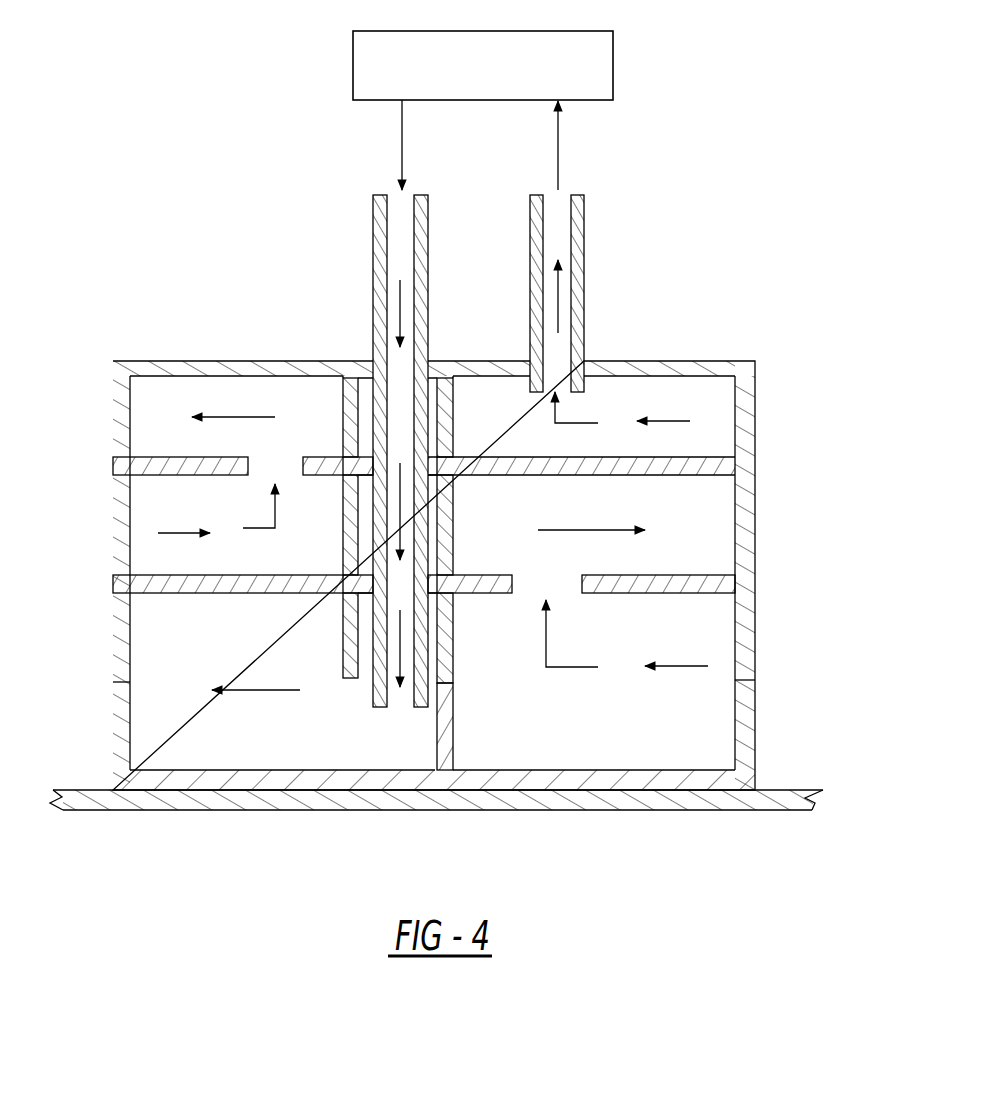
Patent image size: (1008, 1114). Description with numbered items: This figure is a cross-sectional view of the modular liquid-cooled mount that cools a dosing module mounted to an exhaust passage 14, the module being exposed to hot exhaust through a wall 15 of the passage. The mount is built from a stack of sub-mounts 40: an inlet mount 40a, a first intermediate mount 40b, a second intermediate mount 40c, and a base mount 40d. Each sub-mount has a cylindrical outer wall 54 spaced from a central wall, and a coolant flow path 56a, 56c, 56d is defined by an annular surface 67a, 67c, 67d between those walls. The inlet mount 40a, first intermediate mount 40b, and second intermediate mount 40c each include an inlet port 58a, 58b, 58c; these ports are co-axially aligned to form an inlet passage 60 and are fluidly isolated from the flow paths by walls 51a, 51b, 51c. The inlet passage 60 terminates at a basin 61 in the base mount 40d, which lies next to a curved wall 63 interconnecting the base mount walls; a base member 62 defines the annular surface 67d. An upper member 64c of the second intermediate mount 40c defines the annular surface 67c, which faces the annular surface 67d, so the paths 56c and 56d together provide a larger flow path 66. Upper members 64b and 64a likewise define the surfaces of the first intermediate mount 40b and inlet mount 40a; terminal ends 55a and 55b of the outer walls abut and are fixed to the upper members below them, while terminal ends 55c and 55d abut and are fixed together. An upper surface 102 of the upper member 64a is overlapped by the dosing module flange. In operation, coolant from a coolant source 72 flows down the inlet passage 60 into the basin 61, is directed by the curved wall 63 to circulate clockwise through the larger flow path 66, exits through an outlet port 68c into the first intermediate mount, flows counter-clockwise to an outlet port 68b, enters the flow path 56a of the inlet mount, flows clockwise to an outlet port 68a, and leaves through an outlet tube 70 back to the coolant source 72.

The exhaust passage 14 is at (107, 812).
The wall 15 is at (436, 800).
The sub-mount 40 is at (700, 794).
The inlet mount 40a is at (755, 391).
The first intermediate mount 40b is at (755, 527).
The second intermediate mount 40c is at (755, 625).
The base mount 40d is at (755, 744).
The wall 51a is at (348, 390).
The wall 51b is at (348, 491).
The wall 51c is at (348, 643).
The cylindrical outer wall 54 is at (373, 236).
The terminal end 55a is at (745, 452).
The terminal end 55b is at (140, 522).
The terminal end 55c is at (128, 683).
The terminal end 55d is at (745, 675).
The coolant flow path 56a is at (153, 436).
The coolant flow path 56c is at (163, 635).
The coolant flow path 56d is at (165, 712).
The inlet port 58a is at (422, 368).
The inlet port 58b is at (433, 455).
The inlet port 58c is at (430, 560).
The inlet passage 60 is at (365, 532).
The basin 61 is at (410, 760).
The base member 62 is at (288, 782).
The curved wall 63 is at (437, 738).
The upper member 64a is at (150, 367).
The upper member 64b is at (162, 476).
The upper member 64c is at (642, 577).
The larger flow path 66 is at (538, 745).
The annular surface 67a is at (172, 377).
The annular surface 67c is at (192, 592).
The annular surface 67d is at (190, 770).
The outlet port 68a is at (585, 370).
The outlet port 68b is at (250, 466).
The outlet port 68c is at (513, 577).
The outlet tube 70 is at (584, 221).
The coolant source 72 is at (613, 62).
The upper surface 102 is at (253, 360).